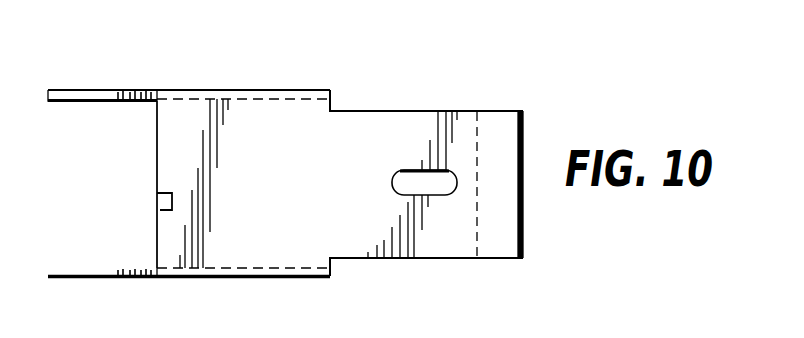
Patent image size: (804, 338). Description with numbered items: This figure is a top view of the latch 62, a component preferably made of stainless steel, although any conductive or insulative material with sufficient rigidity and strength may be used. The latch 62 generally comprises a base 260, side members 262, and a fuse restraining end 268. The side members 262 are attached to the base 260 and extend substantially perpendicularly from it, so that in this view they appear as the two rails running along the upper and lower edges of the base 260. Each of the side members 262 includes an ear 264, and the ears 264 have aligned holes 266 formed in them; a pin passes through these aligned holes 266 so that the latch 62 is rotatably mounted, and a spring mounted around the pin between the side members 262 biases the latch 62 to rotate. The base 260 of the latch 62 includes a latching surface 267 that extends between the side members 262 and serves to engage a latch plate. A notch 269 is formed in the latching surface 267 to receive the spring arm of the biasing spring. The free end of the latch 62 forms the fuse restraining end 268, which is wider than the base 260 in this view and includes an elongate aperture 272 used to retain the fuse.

The latch 62 is at (291, 171).
The base 260 is at (291, 233).
The side members 262 is at (247, 90).
The ears 264 is at (140, 90).
The aligned holes 266 is at (82, 90).
The latching surface 267 is at (157, 143).
The fuse restraining end 268 is at (540, 78).
The notch 269 is at (157, 207).
The elongate aperture 272 is at (412, 142).